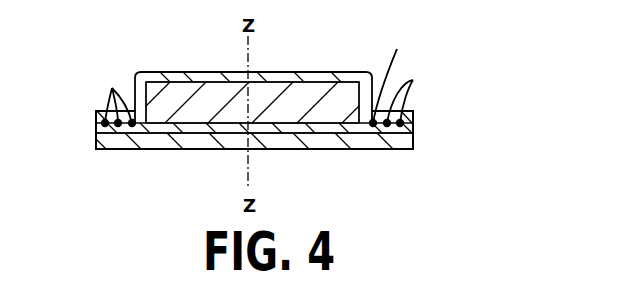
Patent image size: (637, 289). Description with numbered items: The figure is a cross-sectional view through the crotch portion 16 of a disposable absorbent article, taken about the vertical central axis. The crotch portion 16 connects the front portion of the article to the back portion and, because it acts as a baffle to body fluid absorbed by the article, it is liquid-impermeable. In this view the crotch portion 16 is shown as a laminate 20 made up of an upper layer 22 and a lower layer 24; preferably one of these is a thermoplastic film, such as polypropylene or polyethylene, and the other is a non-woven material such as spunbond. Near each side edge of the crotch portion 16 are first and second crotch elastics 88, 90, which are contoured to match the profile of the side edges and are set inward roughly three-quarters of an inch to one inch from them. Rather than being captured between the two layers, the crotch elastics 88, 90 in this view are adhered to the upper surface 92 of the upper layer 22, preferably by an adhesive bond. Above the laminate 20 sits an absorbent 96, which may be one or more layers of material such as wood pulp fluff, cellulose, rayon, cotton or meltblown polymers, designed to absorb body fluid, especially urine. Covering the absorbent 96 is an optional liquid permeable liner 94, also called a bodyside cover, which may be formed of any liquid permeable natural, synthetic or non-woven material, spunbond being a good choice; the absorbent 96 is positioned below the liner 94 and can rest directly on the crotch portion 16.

The crotch portion 16 is at (466, 53).
The laminate 20 is at (426, 115).
The upper layer 22 is at (165, 126).
The lower layer 24 is at (206, 128).
The first crotch elastic 88 is at (112, 88).
The second crotch elastic 90 is at (414, 97).
The upper surface 92 is at (394, 77).
The liquid permeable liner 94 is at (284, 72).
The absorbent 96 is at (323, 92).